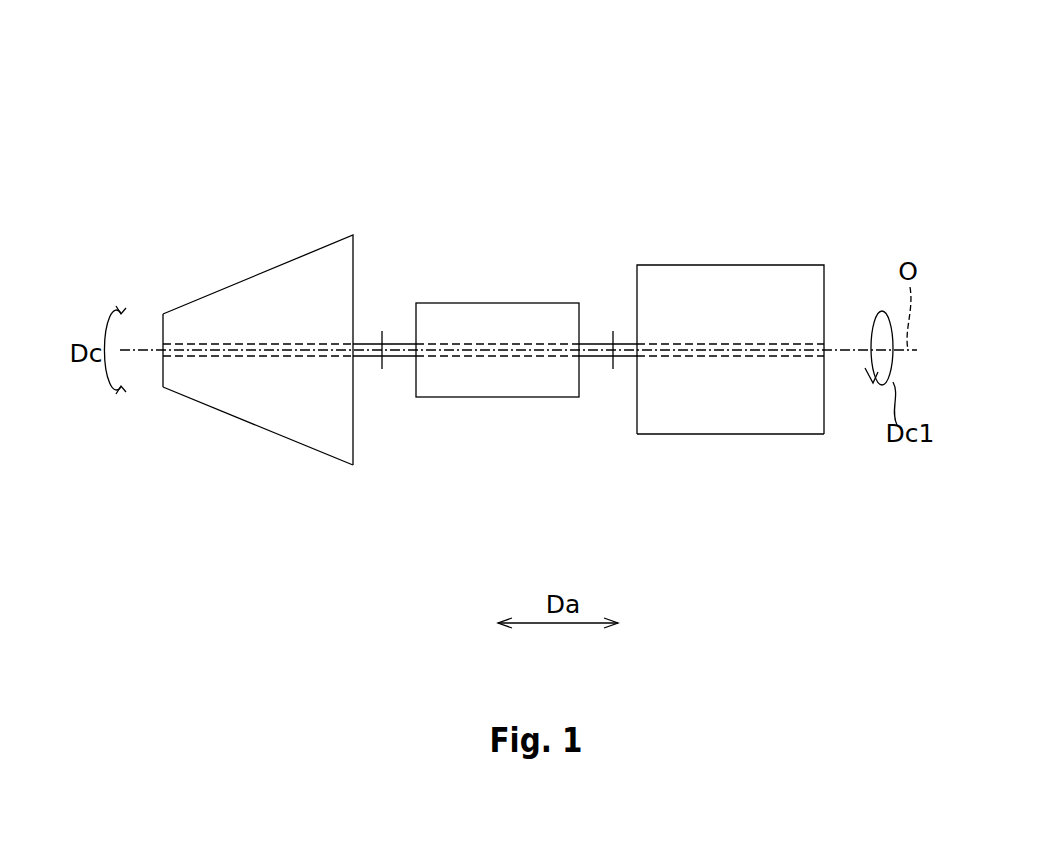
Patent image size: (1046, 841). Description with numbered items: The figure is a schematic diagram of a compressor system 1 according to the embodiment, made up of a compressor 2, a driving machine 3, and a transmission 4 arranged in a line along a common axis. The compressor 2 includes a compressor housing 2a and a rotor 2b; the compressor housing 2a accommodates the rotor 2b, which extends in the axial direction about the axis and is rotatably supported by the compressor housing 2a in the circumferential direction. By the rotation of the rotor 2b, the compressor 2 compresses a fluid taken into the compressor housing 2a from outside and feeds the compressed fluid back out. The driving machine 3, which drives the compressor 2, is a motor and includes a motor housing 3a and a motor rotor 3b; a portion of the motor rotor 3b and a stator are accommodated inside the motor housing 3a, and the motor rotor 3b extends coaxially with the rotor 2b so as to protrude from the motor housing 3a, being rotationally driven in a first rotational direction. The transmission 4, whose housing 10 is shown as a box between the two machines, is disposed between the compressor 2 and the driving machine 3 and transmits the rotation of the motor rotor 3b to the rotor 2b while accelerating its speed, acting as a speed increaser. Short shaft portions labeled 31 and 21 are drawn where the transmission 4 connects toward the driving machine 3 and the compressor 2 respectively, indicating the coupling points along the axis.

The compressor system 1 is at (580, 176).
The compressor 2 is at (265, 266).
The compressor housing 2a is at (320, 452).
The rotor 2b is at (263, 355).
The driving machine 3 is at (735, 265).
The motor housing 3a is at (792, 435).
The motor rotor 3b is at (720, 355).
The transmission 4 is at (497, 303).
The housing 10 is at (485, 398).
The joint portion 21 is at (590, 357).
The joint portion 31 is at (400, 357).